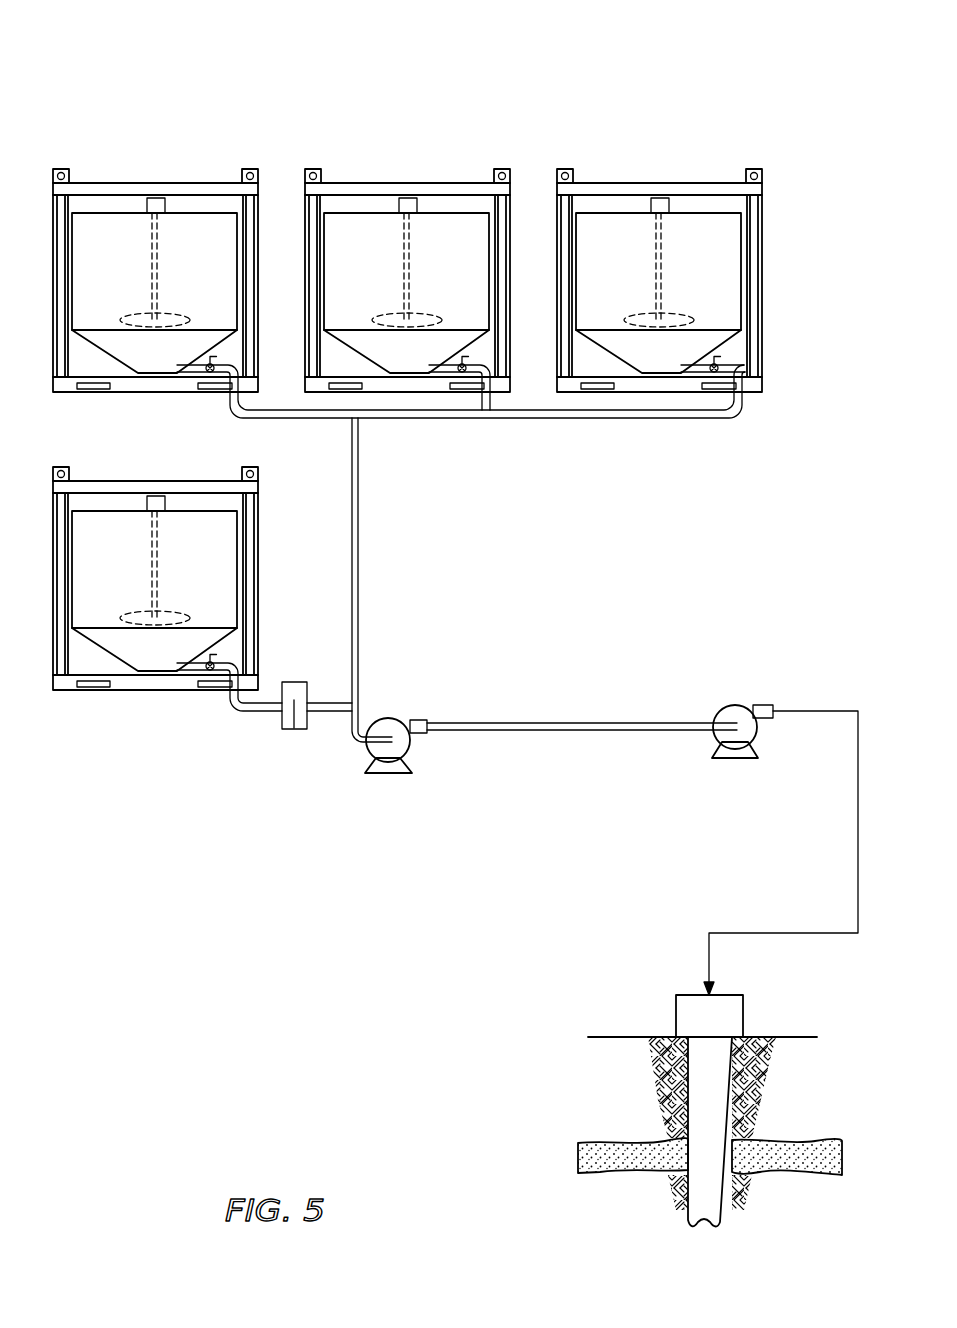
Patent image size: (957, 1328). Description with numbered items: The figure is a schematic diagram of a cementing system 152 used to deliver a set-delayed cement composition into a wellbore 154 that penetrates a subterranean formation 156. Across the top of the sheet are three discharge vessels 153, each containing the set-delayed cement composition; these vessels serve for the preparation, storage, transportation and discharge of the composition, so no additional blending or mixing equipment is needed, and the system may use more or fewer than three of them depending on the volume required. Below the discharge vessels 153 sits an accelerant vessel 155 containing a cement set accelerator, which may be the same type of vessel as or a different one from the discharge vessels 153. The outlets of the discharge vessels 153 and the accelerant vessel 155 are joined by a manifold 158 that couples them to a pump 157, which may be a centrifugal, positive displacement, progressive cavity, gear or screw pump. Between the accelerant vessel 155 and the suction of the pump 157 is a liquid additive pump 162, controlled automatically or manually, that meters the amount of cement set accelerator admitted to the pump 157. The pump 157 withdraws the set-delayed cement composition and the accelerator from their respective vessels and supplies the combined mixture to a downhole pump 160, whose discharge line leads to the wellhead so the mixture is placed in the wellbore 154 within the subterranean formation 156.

The cementing system 152 is at (785, 72).
The discharge vessel 153 is at (202, 168).
The wellbore 154 is at (775, 1120).
The accelerant vessel 155 is at (112, 698).
The subterranean formation 156 is at (669, 1099).
The pump 157 is at (382, 720).
The manifold 158 is at (358, 543).
The downhole pump 160 is at (723, 702).
The liquid additive pump 162 is at (303, 730).